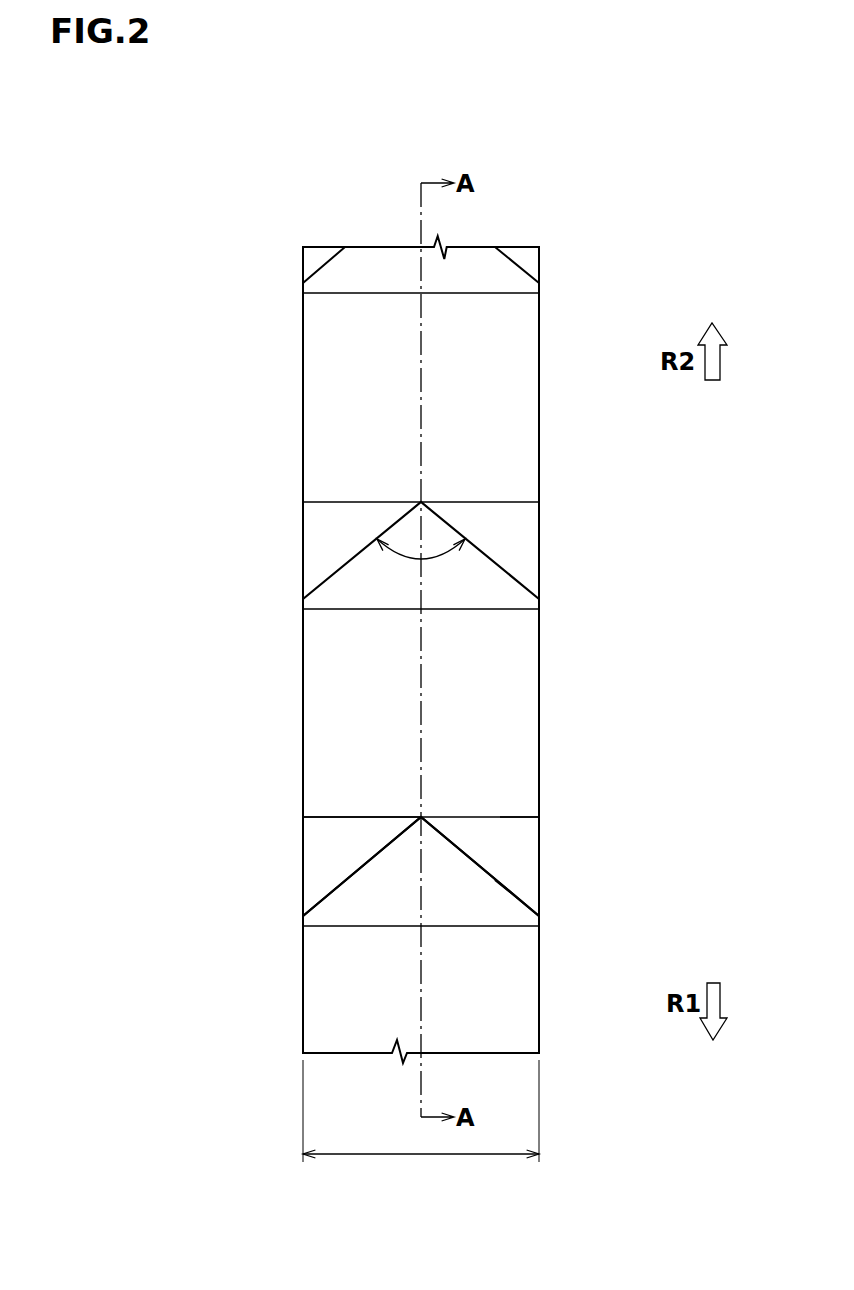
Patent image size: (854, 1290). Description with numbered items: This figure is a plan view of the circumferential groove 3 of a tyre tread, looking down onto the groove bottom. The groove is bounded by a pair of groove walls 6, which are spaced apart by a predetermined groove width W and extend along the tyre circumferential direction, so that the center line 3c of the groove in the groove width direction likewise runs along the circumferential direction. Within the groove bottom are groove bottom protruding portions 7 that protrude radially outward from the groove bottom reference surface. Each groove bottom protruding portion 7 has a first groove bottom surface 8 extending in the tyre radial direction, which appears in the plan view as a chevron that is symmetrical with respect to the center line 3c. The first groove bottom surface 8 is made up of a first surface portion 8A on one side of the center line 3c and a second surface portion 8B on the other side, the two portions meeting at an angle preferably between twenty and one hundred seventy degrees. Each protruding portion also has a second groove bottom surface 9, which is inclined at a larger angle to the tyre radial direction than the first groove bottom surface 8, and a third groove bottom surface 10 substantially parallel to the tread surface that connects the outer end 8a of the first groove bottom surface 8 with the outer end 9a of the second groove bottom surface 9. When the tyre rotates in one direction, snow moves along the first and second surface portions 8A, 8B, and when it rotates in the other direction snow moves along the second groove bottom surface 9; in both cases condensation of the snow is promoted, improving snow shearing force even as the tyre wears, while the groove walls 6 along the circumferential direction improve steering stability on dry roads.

The circumferential groove 3 is at (690, 218).
The center line 3c is at (421, 233).
The groove walls 6 is at (526, 379).
The groove bottom protruding portions 7 is at (490, 342).
The first groove bottom surface 8 is at (222, 955).
The first surface portion 8A is at (376, 880).
The second surface portion 8B is at (467, 867).
The outer end of first groove bottom surface 8a is at (502, 881).
The second groove bottom surface 9 is at (378, 397).
The outer end of second groove bottom surface 9a is at (510, 817).
The third groove bottom surface 10 is at (365, 845).
The groove width W is at (421, 1111).